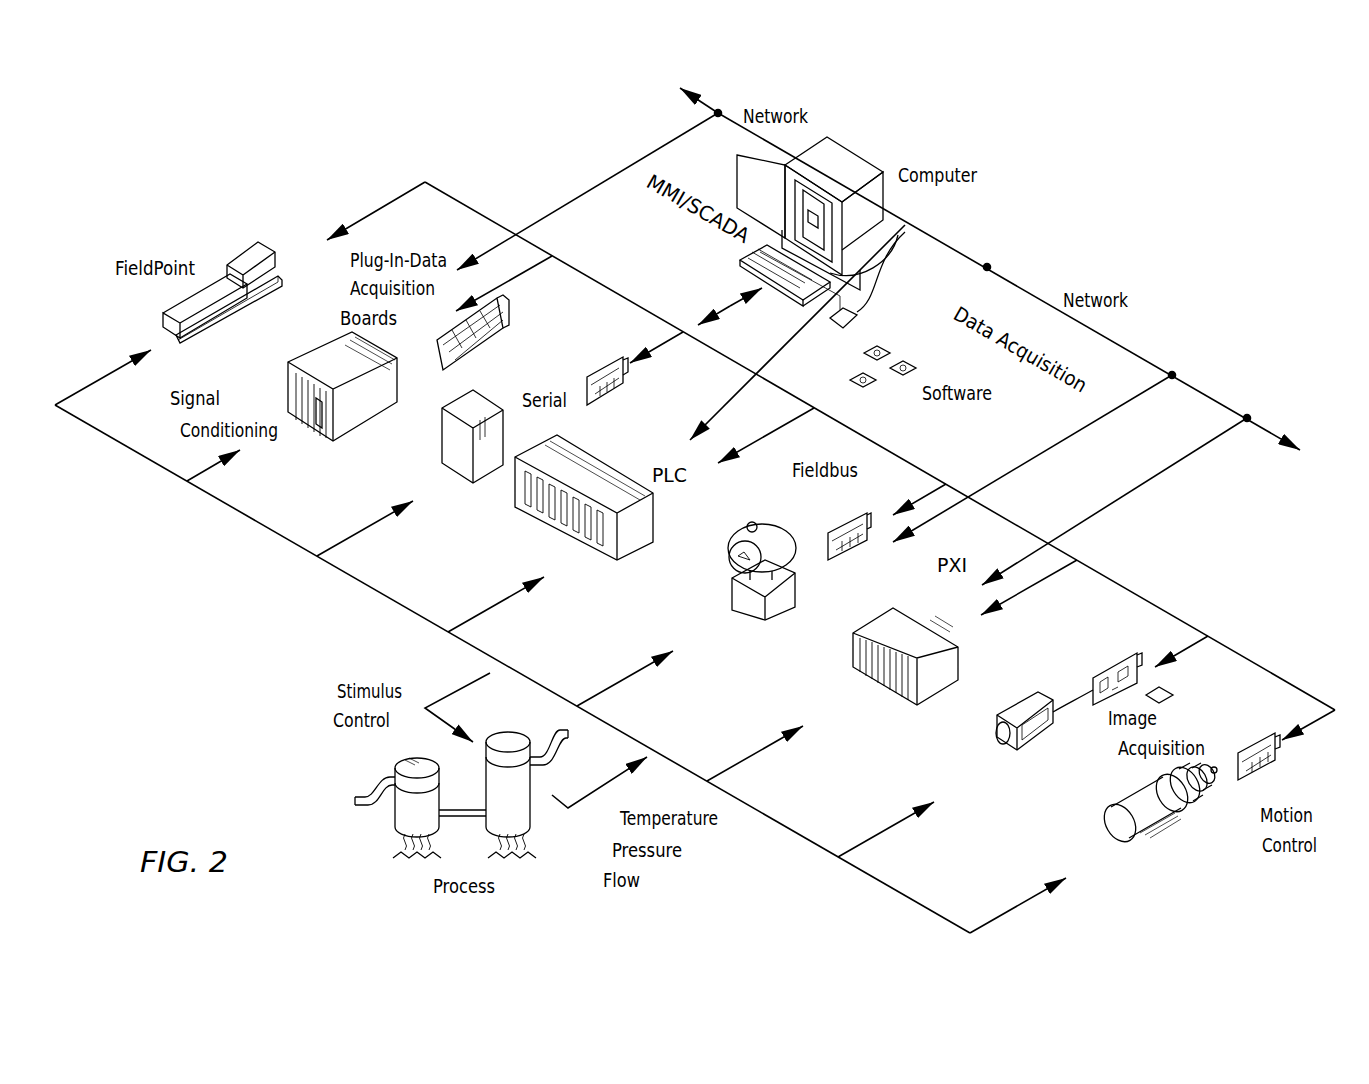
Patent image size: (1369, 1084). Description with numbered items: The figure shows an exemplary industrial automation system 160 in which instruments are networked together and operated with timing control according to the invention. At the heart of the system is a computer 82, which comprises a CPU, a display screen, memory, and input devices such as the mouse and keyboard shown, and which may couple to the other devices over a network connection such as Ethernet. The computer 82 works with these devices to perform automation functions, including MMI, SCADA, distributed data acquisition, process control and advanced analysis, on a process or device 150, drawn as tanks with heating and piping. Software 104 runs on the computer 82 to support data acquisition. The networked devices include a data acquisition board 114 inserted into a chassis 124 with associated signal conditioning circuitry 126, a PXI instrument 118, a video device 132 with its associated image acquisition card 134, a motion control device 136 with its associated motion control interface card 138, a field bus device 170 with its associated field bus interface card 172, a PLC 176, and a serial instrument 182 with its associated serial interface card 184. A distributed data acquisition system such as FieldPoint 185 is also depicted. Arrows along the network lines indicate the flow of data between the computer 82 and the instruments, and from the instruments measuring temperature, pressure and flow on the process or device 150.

The industrial automation system 160 is at (1115, 152).
The computer 82 is at (848, 155).
The FieldPoint distributed I/O system 185 is at (234, 252).
The chassis 124 is at (327, 393).
The signal conditioning circuitry 126 is at (318, 424).
The data acquisition board 114 is at (500, 310).
The serial interface card 184 is at (603, 367).
The serial instrument 182 is at (443, 462).
The PLC 176 is at (602, 468).
The field bus interface card 172 is at (847, 520).
The field bus device 170 is at (735, 602).
The software 104 is at (882, 366).
The PXI instrument 118 is at (907, 620).
The image acquisition card 134 is at (1108, 665).
The video device 132 is at (1000, 743).
The motion control device 136 is at (1150, 828).
The motion control interface card 138 is at (1263, 765).
The process or device 150 is at (367, 787).